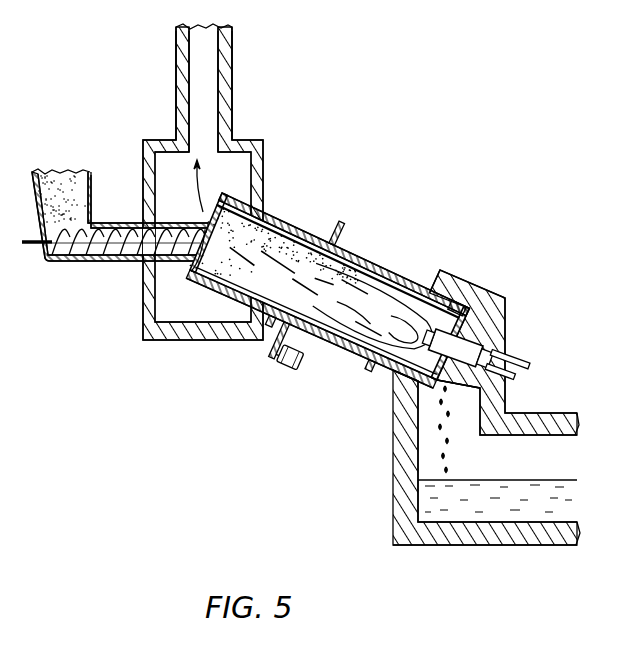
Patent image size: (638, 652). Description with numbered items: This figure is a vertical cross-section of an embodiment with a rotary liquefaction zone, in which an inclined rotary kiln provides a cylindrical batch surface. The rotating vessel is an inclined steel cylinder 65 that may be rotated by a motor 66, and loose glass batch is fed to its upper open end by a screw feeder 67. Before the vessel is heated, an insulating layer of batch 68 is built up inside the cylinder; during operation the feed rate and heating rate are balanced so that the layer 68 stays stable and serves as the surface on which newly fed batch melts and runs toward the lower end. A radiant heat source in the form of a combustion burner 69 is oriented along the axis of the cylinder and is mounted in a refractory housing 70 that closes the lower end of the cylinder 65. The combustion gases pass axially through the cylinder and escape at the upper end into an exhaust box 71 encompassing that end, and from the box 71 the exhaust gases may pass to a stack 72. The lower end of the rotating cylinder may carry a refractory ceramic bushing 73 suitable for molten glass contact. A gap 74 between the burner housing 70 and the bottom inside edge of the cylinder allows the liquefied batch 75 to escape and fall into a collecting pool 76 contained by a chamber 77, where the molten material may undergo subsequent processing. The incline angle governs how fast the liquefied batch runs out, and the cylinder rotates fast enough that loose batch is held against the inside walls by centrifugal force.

The inclined steel cylinder 65 is at (318, 312).
The motor 66 is at (293, 365).
The screw feeder 67 is at (118, 262).
The insulating layer of batch 68 is at (272, 270).
The combustion burner 69 is at (441, 305).
The refractory housing 70 is at (505, 320).
The exhaust box 71 is at (263, 152).
The stack 72 is at (232, 60).
The refractory ceramic bushing 73 is at (470, 310).
The gap 74 is at (445, 380).
The liquefied batch 75 is at (447, 428).
The collecting pool 76 is at (533, 480).
The chamber 77 is at (393, 509).